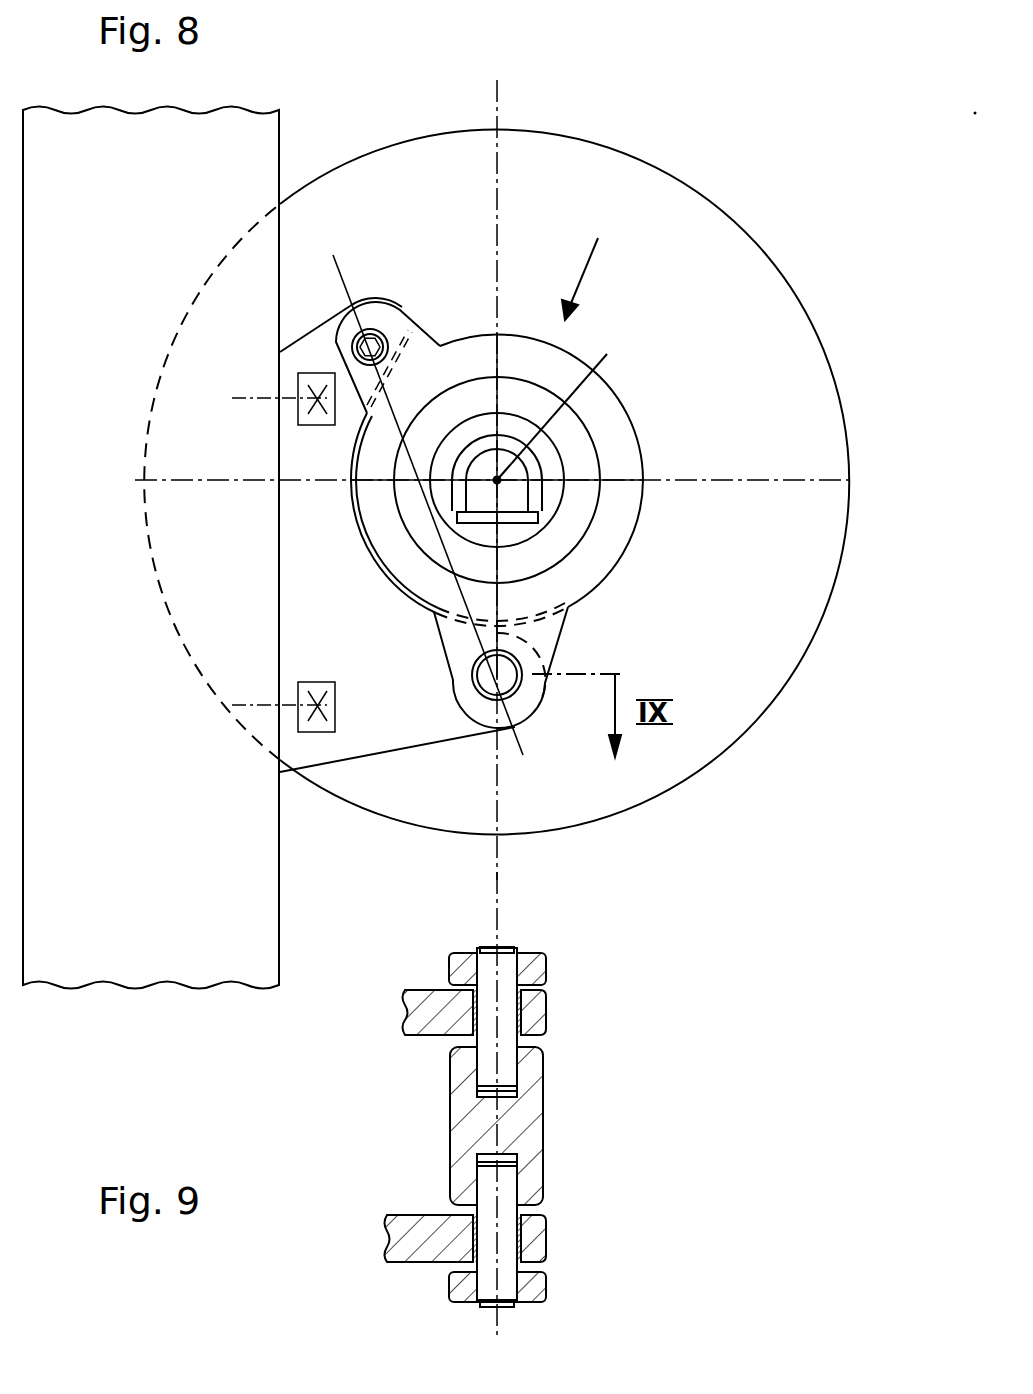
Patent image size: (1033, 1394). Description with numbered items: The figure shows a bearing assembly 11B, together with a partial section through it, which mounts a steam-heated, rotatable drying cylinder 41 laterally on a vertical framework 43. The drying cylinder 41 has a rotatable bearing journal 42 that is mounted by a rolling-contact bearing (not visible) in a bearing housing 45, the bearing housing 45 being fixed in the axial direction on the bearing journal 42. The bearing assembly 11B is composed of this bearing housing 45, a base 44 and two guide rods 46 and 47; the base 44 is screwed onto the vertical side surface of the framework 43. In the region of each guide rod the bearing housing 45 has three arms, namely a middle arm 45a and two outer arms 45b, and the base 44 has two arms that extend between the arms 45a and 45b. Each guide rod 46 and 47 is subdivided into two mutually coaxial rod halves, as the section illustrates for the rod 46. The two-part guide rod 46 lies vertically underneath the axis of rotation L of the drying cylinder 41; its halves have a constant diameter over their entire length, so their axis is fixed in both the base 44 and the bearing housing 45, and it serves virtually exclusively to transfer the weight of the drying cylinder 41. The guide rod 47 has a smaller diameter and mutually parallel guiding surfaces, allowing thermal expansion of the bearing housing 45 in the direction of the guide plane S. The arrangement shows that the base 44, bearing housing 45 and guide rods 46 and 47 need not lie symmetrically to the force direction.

In FIG. 8, the drying cylinder 41 is at (573, 157).
In FIG. 8, the bearing journal 42 is at (587, 468).
In FIG. 8, the framework 43 is at (142, 968).
In FIG. 8, the base 44 is at (348, 742).
In FIG. 8, the bearing housing 45 is at (618, 540).
In FIG. 9, the middle arm 45a is at (535, 1138).
In FIG. 8, the outer arms 45b is at (538, 697).
In FIG. 9, the outer arms 45b is at (452, 950).
In FIG. 8, the guide rod 46 is at (478, 680).
In FIG. 9, the guide rod 46 is at (488, 1067).
In FIG. 8, the guide rod 47 is at (386, 336).
In FIG. 8, the bearing assembly 11B is at (601, 261).
In FIG. 8, the guide plane S is at (346, 262).
In FIG. 8, the axis of rotation L is at (564, 404).